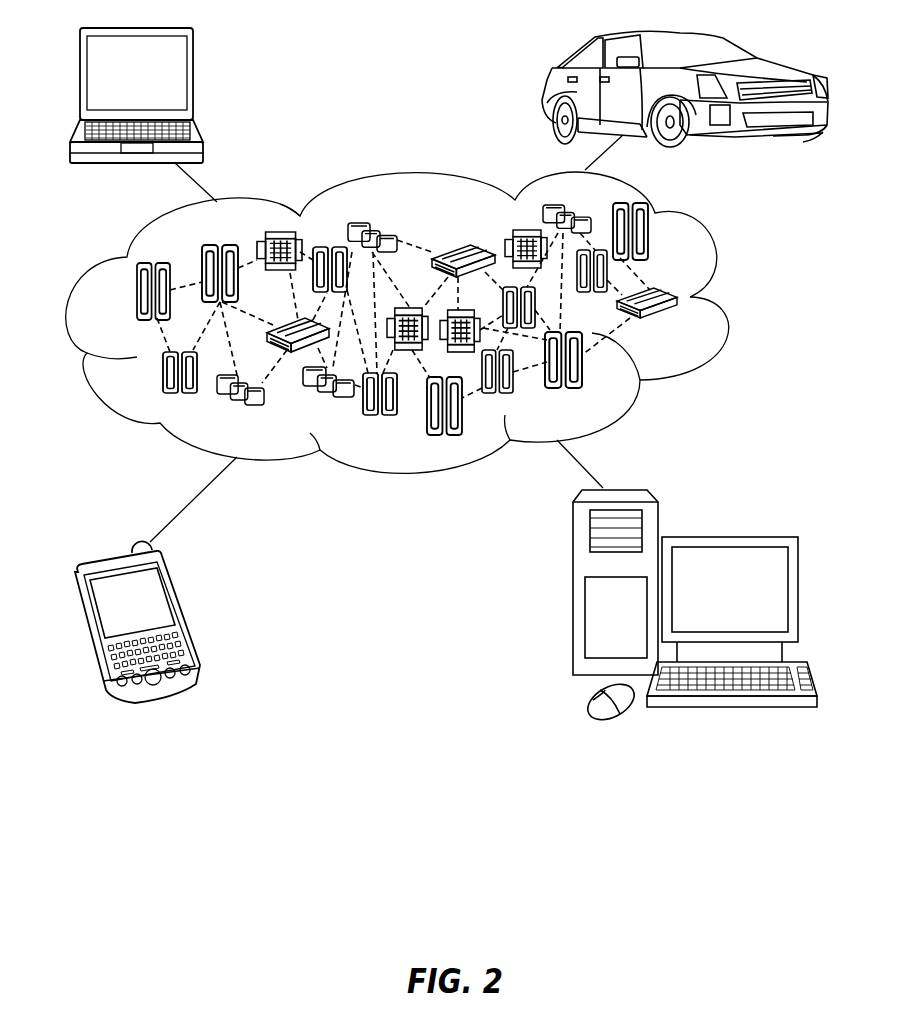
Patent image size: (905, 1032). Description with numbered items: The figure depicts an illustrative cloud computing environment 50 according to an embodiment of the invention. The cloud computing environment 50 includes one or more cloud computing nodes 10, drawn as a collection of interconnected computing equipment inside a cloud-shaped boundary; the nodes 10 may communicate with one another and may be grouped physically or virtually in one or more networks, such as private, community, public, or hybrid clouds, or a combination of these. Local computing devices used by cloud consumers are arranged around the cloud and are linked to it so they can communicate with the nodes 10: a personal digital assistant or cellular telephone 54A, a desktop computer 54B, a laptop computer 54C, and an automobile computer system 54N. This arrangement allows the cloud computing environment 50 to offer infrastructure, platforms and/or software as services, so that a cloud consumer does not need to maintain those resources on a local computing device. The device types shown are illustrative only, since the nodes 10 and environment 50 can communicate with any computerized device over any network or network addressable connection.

The cloud computing node 10 is at (683, 327).
The cloud computing environment 50 is at (727, 303).
The personal digital assistant or cellular telephone 54A is at (186, 613).
The desktop computer 54B is at (728, 536).
The laptop computer 54C is at (193, 80).
The automobile computer system 54N is at (552, 92).